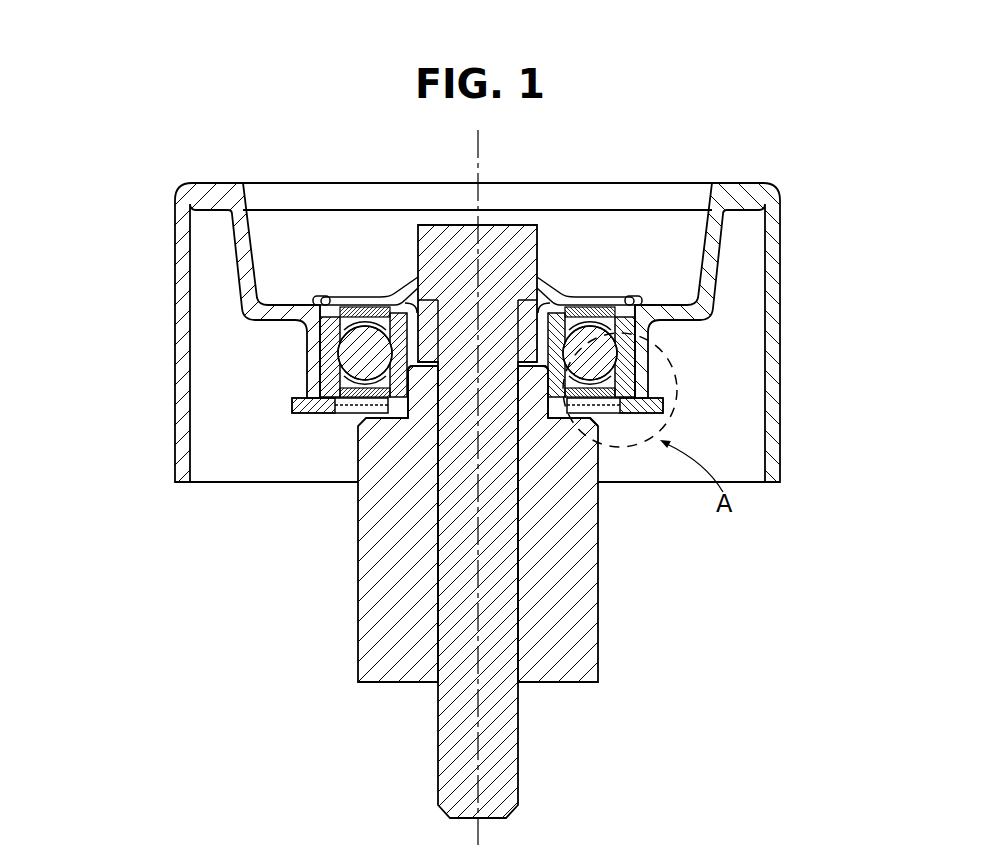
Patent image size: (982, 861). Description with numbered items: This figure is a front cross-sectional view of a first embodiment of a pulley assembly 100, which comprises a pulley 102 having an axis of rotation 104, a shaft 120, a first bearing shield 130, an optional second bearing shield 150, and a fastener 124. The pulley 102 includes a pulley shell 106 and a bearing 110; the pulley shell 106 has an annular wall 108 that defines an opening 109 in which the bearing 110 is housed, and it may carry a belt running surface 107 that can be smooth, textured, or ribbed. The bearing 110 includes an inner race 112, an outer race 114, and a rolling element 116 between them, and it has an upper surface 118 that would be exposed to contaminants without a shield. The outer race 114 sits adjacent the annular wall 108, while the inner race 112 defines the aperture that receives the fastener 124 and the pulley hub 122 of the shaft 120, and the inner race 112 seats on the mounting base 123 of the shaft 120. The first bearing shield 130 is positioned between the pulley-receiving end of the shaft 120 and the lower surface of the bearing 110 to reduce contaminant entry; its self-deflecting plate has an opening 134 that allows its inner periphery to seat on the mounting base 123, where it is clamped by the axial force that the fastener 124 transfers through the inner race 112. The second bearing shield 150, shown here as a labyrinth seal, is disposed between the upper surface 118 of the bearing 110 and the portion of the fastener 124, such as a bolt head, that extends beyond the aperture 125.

The pulley assembly 100 is at (828, 204).
The pulley 102 is at (467, 311).
The axis of rotation 104 is at (482, 146).
The pulley shell 106 is at (777, 284).
The belt running surface 107 is at (173, 310).
The annular wall 108 is at (312, 362).
The opening 109 is at (693, 274).
The bearing 110 is at (335, 367).
The inner race 112 is at (395, 312).
The outer race 114 is at (328, 308).
The rolling element 116 is at (362, 370).
The upper surface 118 is at (594, 340).
The shaft 120 is at (465, 524).
The pulley hub 122 is at (527, 390).
The mounting base 123 is at (562, 420).
The fastener 124 is at (448, 728).
The aperture 125 is at (564, 292).
The first bearing shield 130 is at (678, 398).
The opening 134 is at (404, 402).
The second bearing shield 150 is at (316, 290).